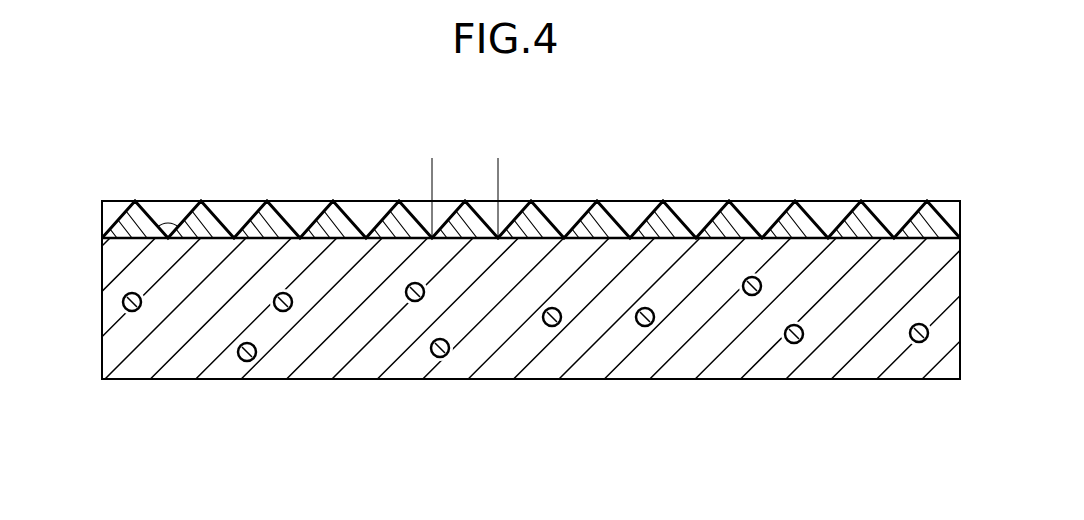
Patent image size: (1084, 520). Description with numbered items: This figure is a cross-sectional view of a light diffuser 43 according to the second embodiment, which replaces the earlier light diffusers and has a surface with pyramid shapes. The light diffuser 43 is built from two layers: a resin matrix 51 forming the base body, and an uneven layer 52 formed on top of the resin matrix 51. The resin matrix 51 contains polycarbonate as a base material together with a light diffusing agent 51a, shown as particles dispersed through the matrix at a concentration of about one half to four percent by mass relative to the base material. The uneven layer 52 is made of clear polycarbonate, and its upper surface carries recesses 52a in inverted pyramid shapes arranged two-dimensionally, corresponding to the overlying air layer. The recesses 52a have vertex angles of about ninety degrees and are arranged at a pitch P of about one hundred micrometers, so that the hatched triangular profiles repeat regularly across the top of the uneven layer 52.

The light diffuser 43 is at (848, 173).
The resin matrix 51 is at (531, 348).
The light diffusing agent 51a is at (785, 334).
The uneven layer 52 is at (501, 185).
The recesses 52a is at (300, 214).
The pitch P is at (498, 172).